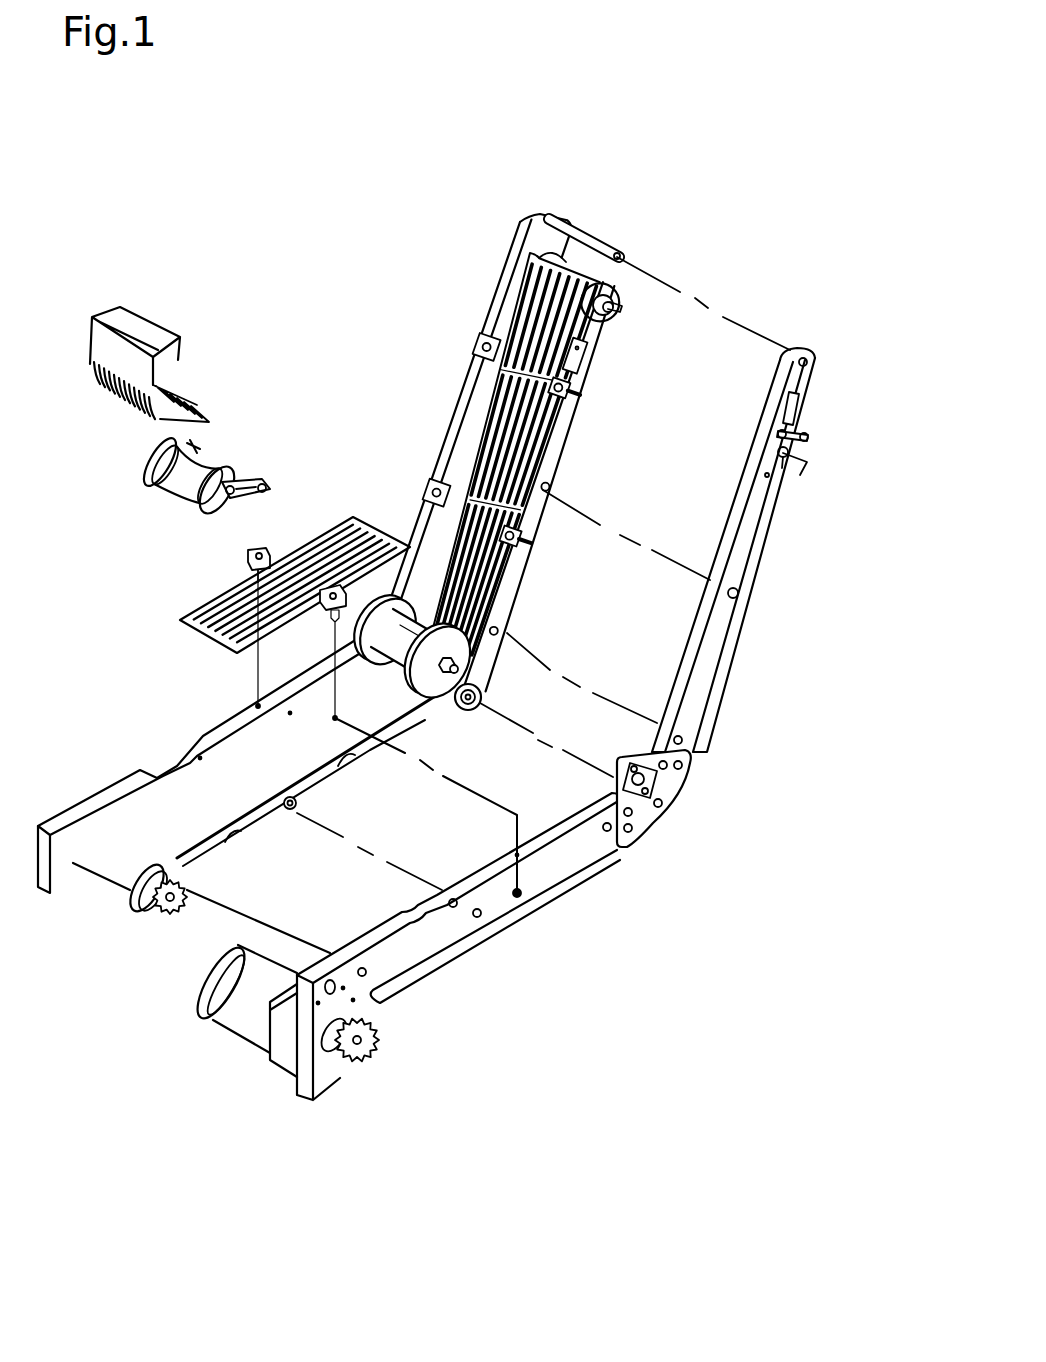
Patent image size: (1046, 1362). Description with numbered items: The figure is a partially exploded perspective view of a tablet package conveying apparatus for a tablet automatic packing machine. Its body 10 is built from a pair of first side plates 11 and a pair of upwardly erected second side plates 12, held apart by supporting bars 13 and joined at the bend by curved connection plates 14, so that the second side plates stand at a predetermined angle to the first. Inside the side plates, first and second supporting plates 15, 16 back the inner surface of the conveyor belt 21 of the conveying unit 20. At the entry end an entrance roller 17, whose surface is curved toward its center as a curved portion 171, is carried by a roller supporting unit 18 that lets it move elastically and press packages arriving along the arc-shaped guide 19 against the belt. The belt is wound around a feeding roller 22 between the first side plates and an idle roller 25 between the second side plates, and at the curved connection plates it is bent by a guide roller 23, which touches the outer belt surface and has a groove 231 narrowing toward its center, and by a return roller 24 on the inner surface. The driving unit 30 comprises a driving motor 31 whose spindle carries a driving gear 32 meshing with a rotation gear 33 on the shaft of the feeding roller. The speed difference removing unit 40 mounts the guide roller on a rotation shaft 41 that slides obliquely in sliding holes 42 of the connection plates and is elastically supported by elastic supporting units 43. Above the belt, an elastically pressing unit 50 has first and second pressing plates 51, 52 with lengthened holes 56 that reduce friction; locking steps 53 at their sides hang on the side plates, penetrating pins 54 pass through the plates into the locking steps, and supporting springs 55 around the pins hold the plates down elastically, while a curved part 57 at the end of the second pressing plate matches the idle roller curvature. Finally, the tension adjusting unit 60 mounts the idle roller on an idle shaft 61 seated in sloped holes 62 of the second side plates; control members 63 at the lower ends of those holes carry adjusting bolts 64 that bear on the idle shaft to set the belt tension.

The body 10 is at (313, 858).
The first side plates 11 is at (123, 783).
The second side plates 12 is at (450, 423).
The supporting bars 13 is at (590, 236).
The curved connection plates 14 is at (675, 782).
The first supporting plates 15 is at (342, 768).
The second supporting plates 16 is at (593, 337).
The entrance roller 17 is at (140, 479).
The curved portion 171 is at (177, 482).
The roller supporting unit 18 is at (245, 485).
The guide 19 is at (100, 346).
The conveying unit 20 is at (96, 934).
The conveyor belt 21 is at (117, 833).
The feeding roller 22 is at (133, 900).
The guide roller 23 is at (500, 645).
The groove 231 is at (460, 617).
The return roller 24 is at (486, 684).
The idle roller 25 is at (612, 300).
The driving unit 30 is at (320, 1075).
The driving motor 31 is at (233, 1013).
The driving gear 32 is at (380, 1043).
The rotation gear 33 is at (160, 910).
The speed difference removing unit 40 is at (698, 842).
The rotation shaft 41 is at (445, 676).
The sliding holes 42 is at (683, 765).
The elastic supporting units 43 is at (660, 790).
The elastically pressing unit 50 is at (278, 564).
The first pressing plate 51 is at (233, 587).
The second pressing plate 52 is at (527, 283).
The locking steps 53 is at (505, 535).
The penetrating pins 54 is at (330, 628).
The supporting springs 55 is at (332, 592).
The lengthened holes 56 is at (498, 397).
The curved part 57 is at (560, 257).
The tension adjusting unit 60 is at (852, 440).
The idle shaft 61 is at (620, 307).
The sloped holes 62 is at (797, 393).
The control members 63 is at (810, 440).
The adjusting bolts 64 is at (793, 457).